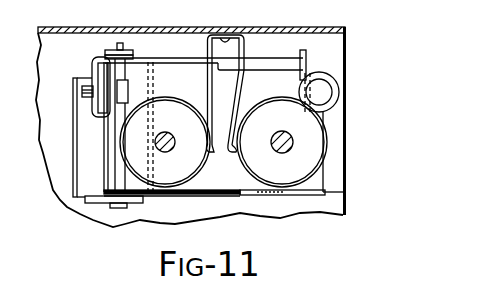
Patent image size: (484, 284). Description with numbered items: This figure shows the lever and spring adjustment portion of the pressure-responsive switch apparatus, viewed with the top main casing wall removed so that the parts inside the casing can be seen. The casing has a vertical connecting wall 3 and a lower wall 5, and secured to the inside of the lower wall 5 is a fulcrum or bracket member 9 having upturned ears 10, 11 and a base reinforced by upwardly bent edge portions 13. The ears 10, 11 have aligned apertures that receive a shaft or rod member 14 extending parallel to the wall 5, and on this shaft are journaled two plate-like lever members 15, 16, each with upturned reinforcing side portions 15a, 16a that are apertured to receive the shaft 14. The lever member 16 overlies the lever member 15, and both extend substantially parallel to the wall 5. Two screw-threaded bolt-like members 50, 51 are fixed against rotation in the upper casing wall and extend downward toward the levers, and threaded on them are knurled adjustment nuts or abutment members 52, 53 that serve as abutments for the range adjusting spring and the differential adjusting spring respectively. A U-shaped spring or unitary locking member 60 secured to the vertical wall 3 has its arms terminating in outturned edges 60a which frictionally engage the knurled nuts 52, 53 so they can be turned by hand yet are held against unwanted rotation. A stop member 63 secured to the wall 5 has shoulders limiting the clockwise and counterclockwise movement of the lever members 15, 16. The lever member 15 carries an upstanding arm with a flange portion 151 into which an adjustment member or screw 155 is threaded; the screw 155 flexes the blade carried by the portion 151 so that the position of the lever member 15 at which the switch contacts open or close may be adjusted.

The vertical wall 3 is at (87, 30).
The lower wall 5 is at (344, 193).
The fulcrum or bracket member 9 is at (79, 200).
The upturned ear 10 is at (104, 207).
The upturned ear 11 is at (133, 52).
The upwardly bent edge portions 13 is at (150, 92).
The shaft or rod member 14 is at (120, 176).
The lever member 15 is at (305, 64).
The upturned reenforcing side portions 15a is at (250, 196).
The lever member 16 is at (266, 68).
The upturned reenforcing side portions 16a is at (206, 196).
The bolt-like member 50 is at (169, 152).
The bolt-like member 51 is at (282, 153).
The adjustment nut or abutment member 52 is at (176, 120).
The adjustment nut or abutment member 53 is at (288, 120).
The U-shaped spring or unitary locking member 60 is at (240, 42).
The outturned edges 60a is at (223, 162).
The stop member 63 is at (331, 82).
The portion or flange 151 is at (94, 112).
The adjustment member or screw 155 is at (126, 88).